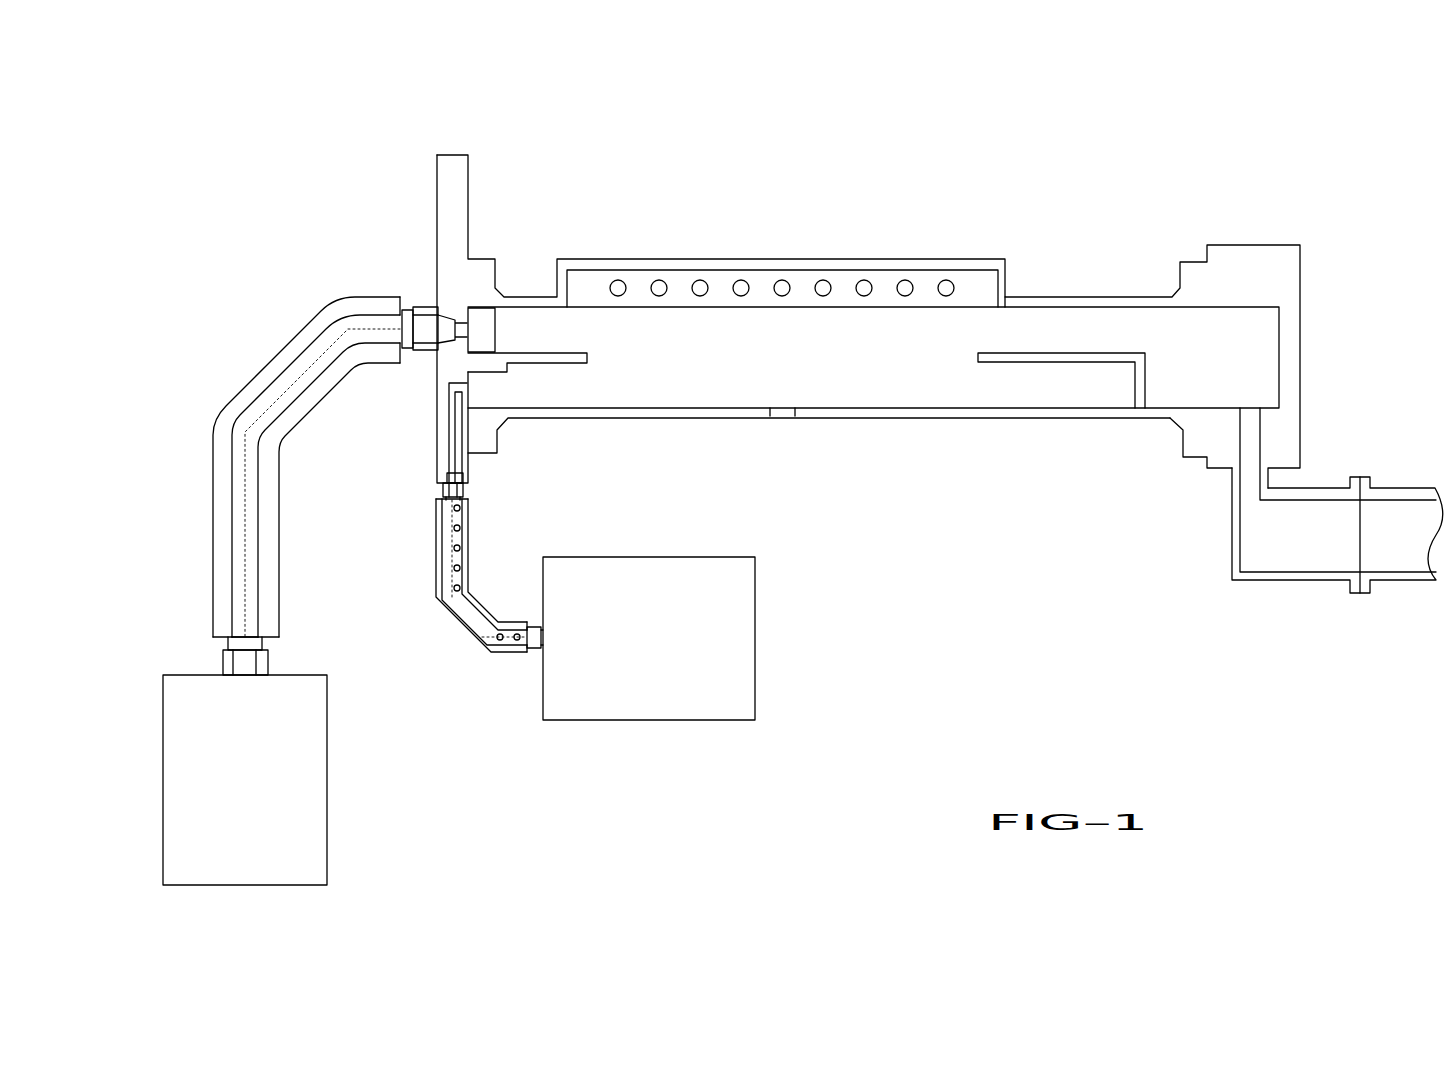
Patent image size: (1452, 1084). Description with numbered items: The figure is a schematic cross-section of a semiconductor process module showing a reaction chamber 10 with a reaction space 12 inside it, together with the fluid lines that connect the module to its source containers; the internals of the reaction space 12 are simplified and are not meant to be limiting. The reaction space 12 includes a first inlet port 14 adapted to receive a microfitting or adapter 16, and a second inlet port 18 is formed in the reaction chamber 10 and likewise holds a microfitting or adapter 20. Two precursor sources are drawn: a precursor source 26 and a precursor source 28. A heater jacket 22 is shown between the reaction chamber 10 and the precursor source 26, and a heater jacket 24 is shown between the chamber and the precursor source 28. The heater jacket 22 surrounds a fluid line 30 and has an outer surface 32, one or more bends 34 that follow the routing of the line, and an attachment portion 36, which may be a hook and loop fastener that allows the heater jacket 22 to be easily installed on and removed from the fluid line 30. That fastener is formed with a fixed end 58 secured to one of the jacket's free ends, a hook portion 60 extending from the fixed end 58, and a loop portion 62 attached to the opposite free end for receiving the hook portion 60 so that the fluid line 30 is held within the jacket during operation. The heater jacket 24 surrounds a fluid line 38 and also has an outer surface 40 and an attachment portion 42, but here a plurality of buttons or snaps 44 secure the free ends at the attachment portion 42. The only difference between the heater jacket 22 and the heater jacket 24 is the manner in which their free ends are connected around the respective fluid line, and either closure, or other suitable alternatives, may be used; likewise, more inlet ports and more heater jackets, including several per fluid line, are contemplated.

The reaction chamber 10 is at (1162, 205).
The reaction space 12 is at (512, 318).
The first inlet port 14 is at (468, 330).
The microfitting or adapter 16 is at (427, 352).
The second inlet port 18 is at (470, 388).
The microfitting or adapter 20 is at (463, 487).
The heater jacket 22 is at (272, 467).
The heater jacket 24 is at (444, 596).
The precursor source 26 is at (328, 776).
The precursor source 28 is at (757, 630).
The fluid line 30 is at (408, 308).
The outer surface 32 is at (213, 527).
The bends 34 is at (316, 295).
The attachment portion 36 is at (258, 487).
The fluid line 38 is at (441, 496).
The outer surface 40 is at (436, 542).
The attachment portion 42 is at (464, 529).
The buttons or snaps 44 is at (458, 562).
The fixed end 58 is at (239, 573).
The hook portion 60 is at (255, 456).
The loop portion 62 is at (312, 538).